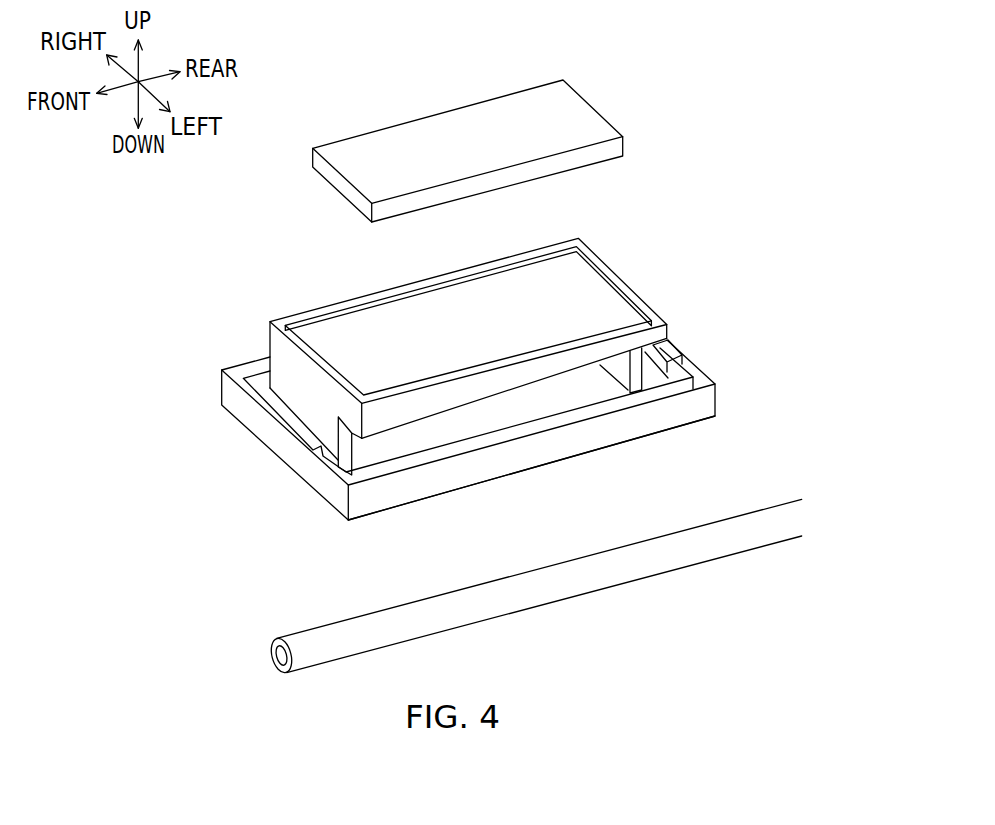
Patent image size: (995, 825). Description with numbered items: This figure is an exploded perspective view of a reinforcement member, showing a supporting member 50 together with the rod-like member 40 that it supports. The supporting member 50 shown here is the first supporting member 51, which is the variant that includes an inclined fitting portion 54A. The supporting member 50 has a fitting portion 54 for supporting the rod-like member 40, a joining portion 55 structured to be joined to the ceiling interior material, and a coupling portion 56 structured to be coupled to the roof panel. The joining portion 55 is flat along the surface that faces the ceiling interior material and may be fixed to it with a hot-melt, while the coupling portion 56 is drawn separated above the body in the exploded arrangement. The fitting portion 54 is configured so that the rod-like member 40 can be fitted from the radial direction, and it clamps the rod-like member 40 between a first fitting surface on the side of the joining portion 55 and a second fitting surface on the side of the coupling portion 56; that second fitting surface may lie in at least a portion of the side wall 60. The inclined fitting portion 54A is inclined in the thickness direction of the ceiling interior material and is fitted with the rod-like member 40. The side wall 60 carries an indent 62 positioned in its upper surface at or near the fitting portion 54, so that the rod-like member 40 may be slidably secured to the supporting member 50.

The rod-like member 40 is at (658, 562).
The supporting member 50 is at (499, 336).
The first supporting member 51 is at (623, 281).
The fitting portion 54 is at (514, 437).
The inclined fitting portion 54A is at (528, 390).
The joining portion 55 is at (592, 457).
The coupling portion 56 is at (450, 130).
The side wall 60 is at (258, 420).
The indent 62 is at (680, 357).